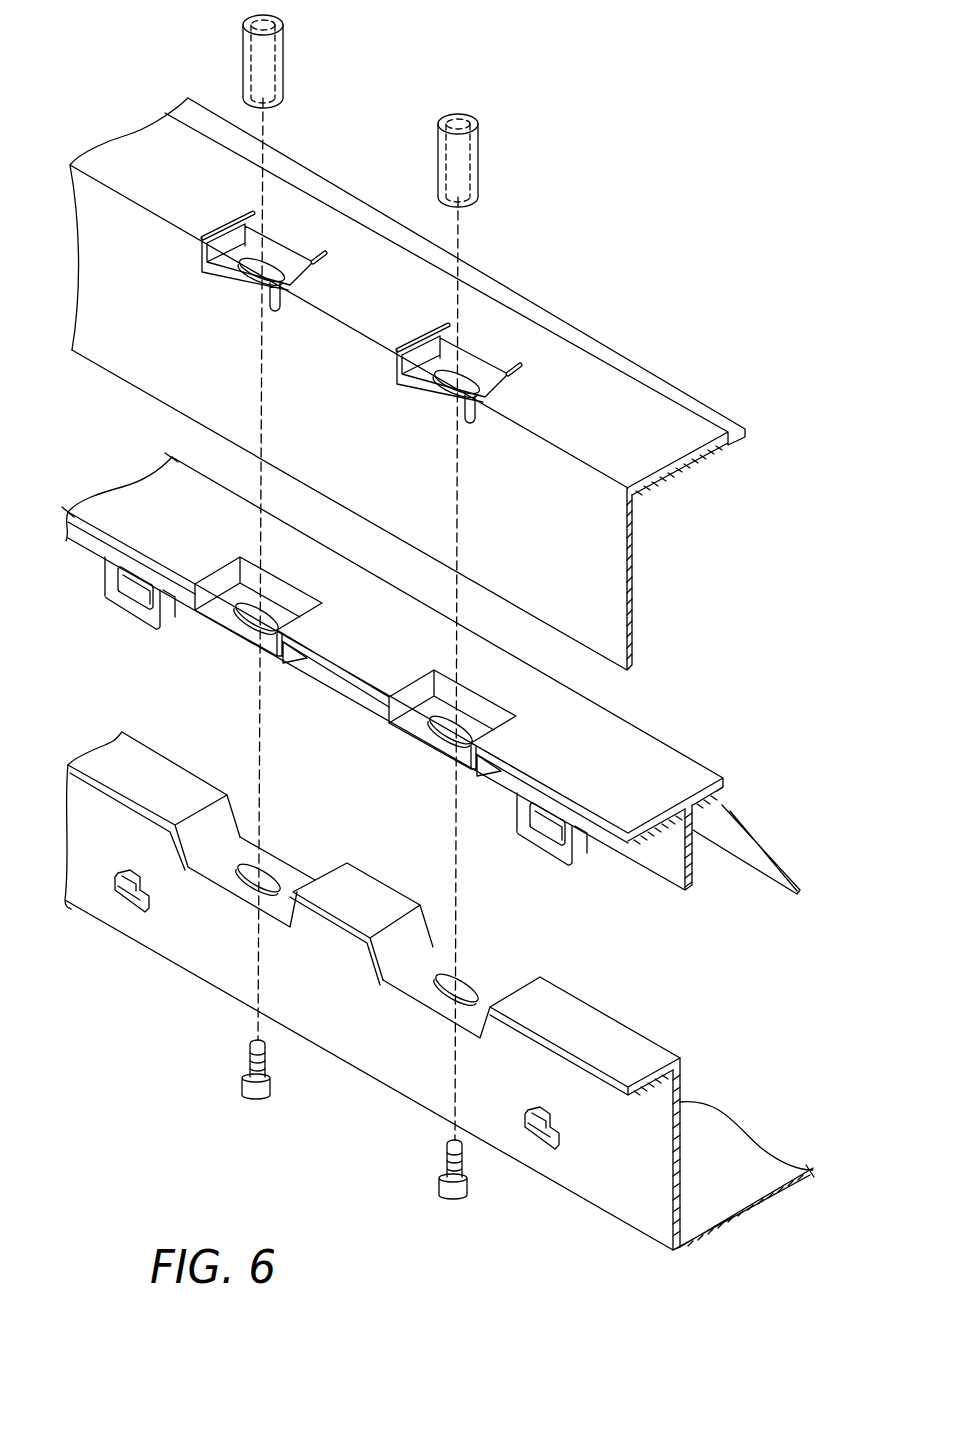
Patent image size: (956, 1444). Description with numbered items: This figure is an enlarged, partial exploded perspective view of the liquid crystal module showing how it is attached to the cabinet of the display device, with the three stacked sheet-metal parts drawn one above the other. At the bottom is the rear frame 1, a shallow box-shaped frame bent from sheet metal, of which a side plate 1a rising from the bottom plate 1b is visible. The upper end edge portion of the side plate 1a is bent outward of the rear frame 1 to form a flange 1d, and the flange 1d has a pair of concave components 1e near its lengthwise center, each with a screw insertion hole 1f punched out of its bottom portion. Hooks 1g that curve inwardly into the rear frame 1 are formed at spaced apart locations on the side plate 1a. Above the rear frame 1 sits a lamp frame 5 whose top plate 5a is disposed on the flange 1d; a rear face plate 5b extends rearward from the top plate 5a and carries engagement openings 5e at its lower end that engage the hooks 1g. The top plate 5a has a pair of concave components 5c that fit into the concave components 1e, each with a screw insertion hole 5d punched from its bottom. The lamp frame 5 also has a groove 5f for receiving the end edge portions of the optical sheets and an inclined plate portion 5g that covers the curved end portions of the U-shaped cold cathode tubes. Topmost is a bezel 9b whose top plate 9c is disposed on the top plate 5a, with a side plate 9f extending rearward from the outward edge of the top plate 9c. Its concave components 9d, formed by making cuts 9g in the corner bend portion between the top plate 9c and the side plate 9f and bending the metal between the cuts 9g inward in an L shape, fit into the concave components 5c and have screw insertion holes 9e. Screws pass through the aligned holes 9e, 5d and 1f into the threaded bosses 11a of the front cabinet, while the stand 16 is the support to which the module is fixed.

The rear frame 1 is at (456, 984).
The side plate 1a is at (413, 1068).
The bottom plate 1b is at (766, 1200).
The flange 1d is at (152, 770).
The concave component 1e is at (286, 870).
The screw insertion hole 1f is at (250, 868).
The hook 1g is at (113, 893).
The lamp frame 5 is at (443, 686).
The top plate 5a is at (392, 648).
The rear face plate 5b is at (656, 852).
The concave component 5c is at (215, 612).
The screw insertion hole 5d is at (253, 632).
The engagement opening 5e is at (133, 605).
The groove 5f is at (735, 797).
The inclined plate portion 5g is at (757, 837).
The bezel 9b is at (407, 384).
The top plate 9c is at (422, 282).
The concave component 9d is at (260, 300).
The screw insertion hole 9e is at (248, 285).
The side plate 9f is at (323, 484).
The cut 9g is at (298, 346).
The boss 11a is at (284, 33).
The stand 16 is at (255, 1090).